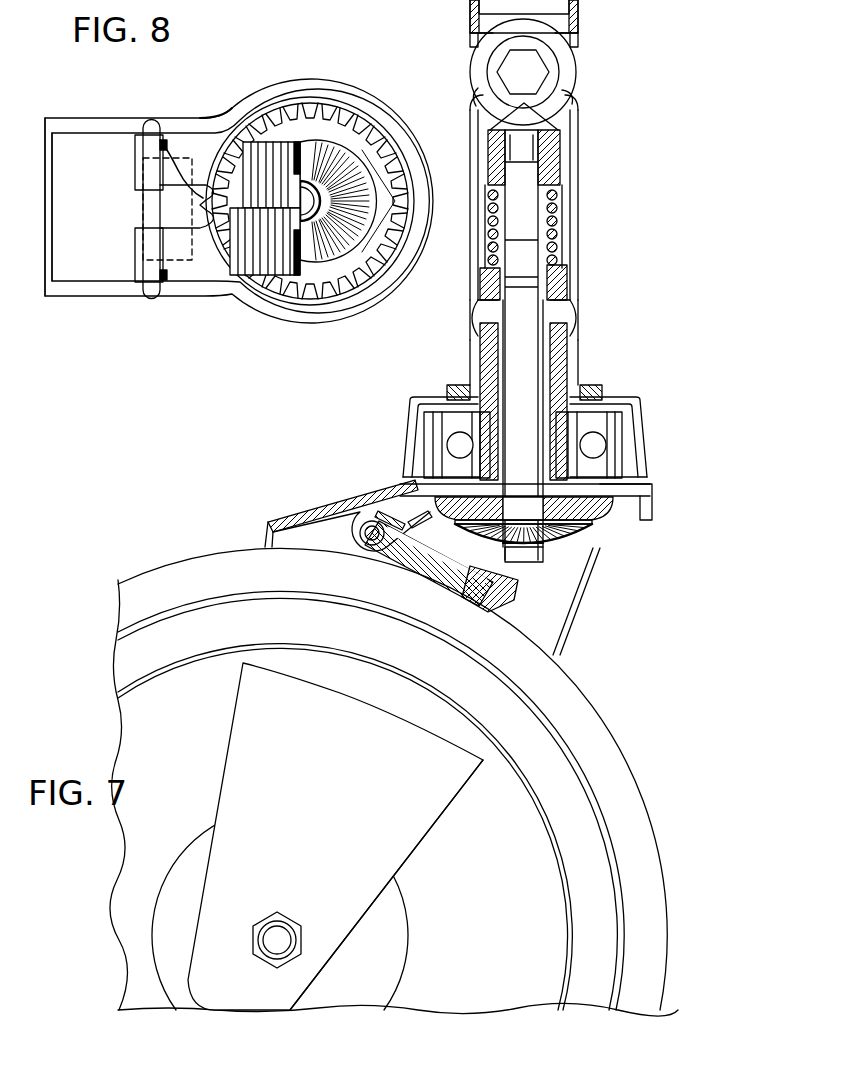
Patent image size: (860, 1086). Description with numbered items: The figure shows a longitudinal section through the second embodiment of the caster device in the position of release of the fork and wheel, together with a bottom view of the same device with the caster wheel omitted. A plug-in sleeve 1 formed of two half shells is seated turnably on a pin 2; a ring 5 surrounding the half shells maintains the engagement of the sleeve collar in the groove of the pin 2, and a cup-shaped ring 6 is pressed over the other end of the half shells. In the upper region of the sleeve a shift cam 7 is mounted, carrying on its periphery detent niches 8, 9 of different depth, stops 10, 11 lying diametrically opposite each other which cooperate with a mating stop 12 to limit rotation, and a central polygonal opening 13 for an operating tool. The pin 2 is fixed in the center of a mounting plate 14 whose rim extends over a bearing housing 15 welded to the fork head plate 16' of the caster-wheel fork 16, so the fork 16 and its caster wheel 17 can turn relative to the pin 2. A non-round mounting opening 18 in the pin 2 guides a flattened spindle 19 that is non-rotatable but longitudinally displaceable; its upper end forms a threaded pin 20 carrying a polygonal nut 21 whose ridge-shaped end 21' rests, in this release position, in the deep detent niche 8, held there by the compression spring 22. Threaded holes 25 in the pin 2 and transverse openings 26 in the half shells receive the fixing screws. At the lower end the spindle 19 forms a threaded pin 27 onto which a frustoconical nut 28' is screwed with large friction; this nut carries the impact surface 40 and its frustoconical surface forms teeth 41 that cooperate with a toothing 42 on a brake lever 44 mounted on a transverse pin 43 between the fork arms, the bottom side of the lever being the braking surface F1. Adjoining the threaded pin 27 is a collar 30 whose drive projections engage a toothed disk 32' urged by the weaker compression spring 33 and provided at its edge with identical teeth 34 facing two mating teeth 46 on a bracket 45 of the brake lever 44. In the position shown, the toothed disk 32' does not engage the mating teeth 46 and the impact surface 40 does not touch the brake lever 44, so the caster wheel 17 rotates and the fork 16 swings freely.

In FIG. 7, the plug-in sleeve 1 is at (578, 272).
In FIG. 7, the pin 2 is at (560, 378).
In FIG. 7, the ring 5 is at (605, 393).
In FIG. 7, the cup-shaped ring 6 is at (470, 18).
In FIG. 7, the shift cam 7 is at (549, 58).
In FIG. 7, the detent niche 8 is at (564, 84).
In FIG. 7, the detent niche 9 is at (480, 103).
In FIG. 7, the stop 10 is at (572, 96).
In FIG. 7, the stop 11 is at (478, 53).
In FIG. 7, the mating stop 12 is at (530, 22).
In FIG. 7, the polygonal opening 13 is at (512, 72).
In FIG. 7, the mounting plate 14 is at (426, 396).
In FIG. 7, the bearing housing 15 is at (620, 446).
In FIG. 8, the caster-wheel fork 16 is at (239, 164).
In FIG. 7, the caster-wheel fork 16 is at (490, 885).
In FIG. 8, the fork head plate 16' is at (239, 61).
In FIG. 7, the fork head plate 16' is at (347, 486).
In FIG. 7, the caster wheel 17 is at (615, 777).
In FIG. 7, the mounting opening 18 is at (562, 300).
In FIG. 7, the spindle 19 is at (532, 360).
In FIG. 7, the threaded pin 20 is at (522, 200).
In FIG. 7, the nut 21 is at (560, 215).
In FIG. 7, the end of the nut 21' is at (568, 120).
In FIG. 7, the compression spring 22 is at (553, 228).
In FIG. 7, the threaded holes 25 is at (562, 312).
In FIG. 7, the transverse openings 26 is at (485, 318).
In FIG. 7, the threaded pin 27 is at (535, 561).
In FIG. 8, the frustoconical nut 28' is at (340, 133).
In FIG. 7, the frustoconical nut 28' is at (577, 571).
In FIG. 7, the collar 30 is at (605, 545).
In FIG. 8, the toothed disk 32' is at (310, 246).
In FIG. 7, the toothed disk 32' is at (564, 500).
In FIG. 7, the compression spring 33 is at (632, 488).
In FIG. 8, the teeth 34 is at (248, 292).
In FIG. 7, the teeth 34 is at (612, 525).
In FIG. 7, the impact surface 40 is at (603, 612).
In FIG. 8, the teeth 41 is at (354, 173).
In FIG. 7, the teeth 41 is at (590, 552).
In FIG. 7, the toothing 42 is at (474, 594).
In FIG. 8, the transverse pin 43 is at (147, 300).
In FIG. 7, the transverse pin 43 is at (375, 521).
In FIG. 8, the brake lever 44 is at (200, 258).
In FIG. 8, the bracket 45 is at (172, 217).
In FIG. 7, the bracket 45 is at (380, 522).
In FIG. 8, the mating teeth 46 is at (153, 157).
In FIG. 7, the mating teeth 46 is at (420, 524).
In FIG. 7, the braking surface F1 is at (496, 618).